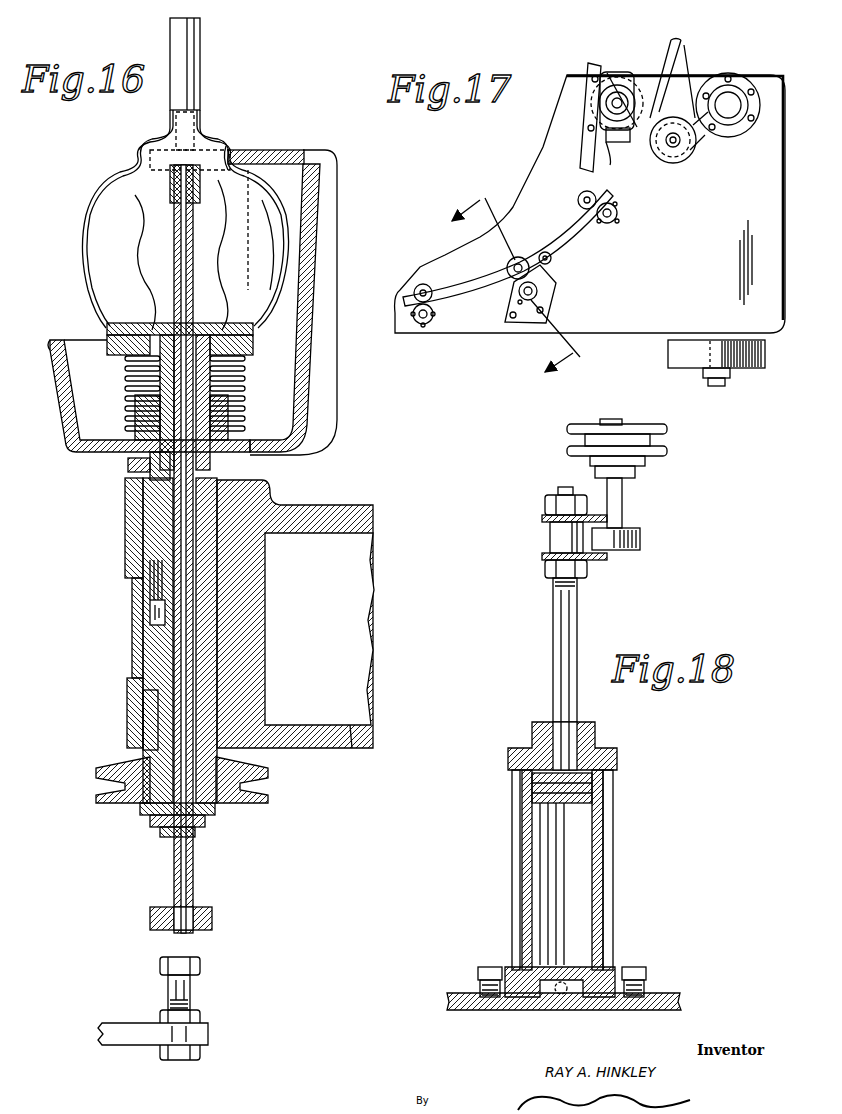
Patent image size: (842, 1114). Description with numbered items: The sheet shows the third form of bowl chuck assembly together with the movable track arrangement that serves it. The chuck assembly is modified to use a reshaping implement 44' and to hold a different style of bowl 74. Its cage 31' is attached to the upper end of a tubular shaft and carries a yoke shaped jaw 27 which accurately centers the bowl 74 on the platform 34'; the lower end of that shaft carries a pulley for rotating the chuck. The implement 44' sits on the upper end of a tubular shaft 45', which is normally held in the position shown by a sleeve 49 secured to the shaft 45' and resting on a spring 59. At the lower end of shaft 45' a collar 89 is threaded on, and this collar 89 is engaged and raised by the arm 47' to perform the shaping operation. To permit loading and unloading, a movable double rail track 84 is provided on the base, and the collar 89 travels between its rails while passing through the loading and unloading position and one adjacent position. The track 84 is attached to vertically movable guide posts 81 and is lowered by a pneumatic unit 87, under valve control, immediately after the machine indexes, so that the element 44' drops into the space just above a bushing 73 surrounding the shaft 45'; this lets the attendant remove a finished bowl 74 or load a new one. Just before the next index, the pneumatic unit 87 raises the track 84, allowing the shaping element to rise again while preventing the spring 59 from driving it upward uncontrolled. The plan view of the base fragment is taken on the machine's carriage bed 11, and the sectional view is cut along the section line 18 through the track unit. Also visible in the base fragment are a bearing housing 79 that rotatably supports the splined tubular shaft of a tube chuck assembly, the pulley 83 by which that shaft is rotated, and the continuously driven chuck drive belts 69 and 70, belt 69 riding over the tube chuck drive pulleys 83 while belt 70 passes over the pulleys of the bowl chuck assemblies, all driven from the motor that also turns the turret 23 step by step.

In FIG. 17, the carriage bed 11 is at (630, 320).
In FIG. 18, the carriage bed 11 is at (672, 995).
In FIG. 17, the section line 18— 18 is at (524, 281).
In FIG. 16, the turret 23 is at (283, 508).
In FIG. 16, the yoke shaped jaw 27 is at (233, 153).
In FIG. 16, the cage 31' is at (203, 302).
In FIG. 16, the platform 34' is at (197, 334).
In FIG. 16, the reshaping implement 44' is at (159, 186).
In FIG. 16, the tubular shaft 45' is at (161, 549).
In FIG. 16, the arm 47' is at (153, 1018).
In FIG. 16, the sleeve 49 is at (150, 488).
In FIG. 16, the spring 59 is at (173, 587).
In FIG. 17, the chuck drive belt 69 is at (688, 64).
In FIG. 17, the chuck drive belt 70 is at (665, 75).
In FIG. 16, the bushing 73 is at (162, 381).
In FIG. 16, the bowl 74 is at (92, 232).
In FIG. 17, the bearing housing 79 is at (633, 143).
In FIG. 17, the guide posts 81 is at (615, 222).
In FIG. 17, the pulley 83 is at (678, 122).
In FIG. 17, the movable double rail track 84 is at (574, 232).
In FIG. 18, the movable double rail track 84 is at (545, 550).
In FIG. 17, the pneumatic unit 87 is at (548, 292).
In FIG. 18, the pneumatic unit 87 is at (525, 858).
In FIG. 16, the collar 89 is at (243, 893).
In FIG. 17, the collar 89 is at (580, 205).
In FIG. 18, the collar 89 is at (640, 538).